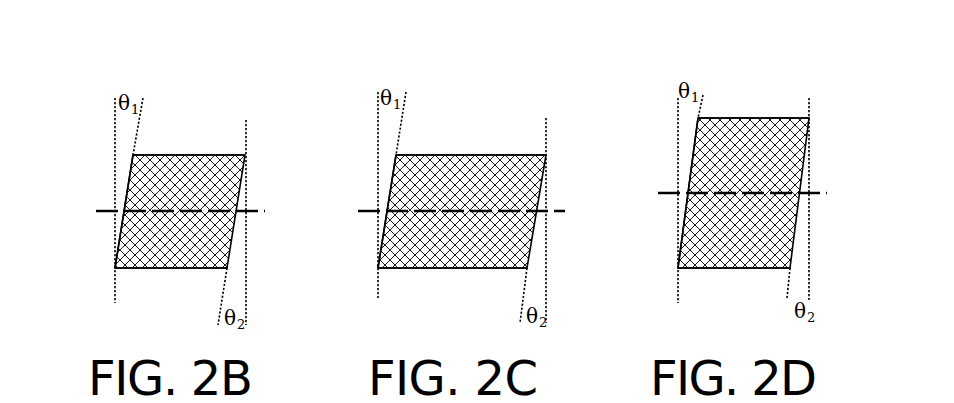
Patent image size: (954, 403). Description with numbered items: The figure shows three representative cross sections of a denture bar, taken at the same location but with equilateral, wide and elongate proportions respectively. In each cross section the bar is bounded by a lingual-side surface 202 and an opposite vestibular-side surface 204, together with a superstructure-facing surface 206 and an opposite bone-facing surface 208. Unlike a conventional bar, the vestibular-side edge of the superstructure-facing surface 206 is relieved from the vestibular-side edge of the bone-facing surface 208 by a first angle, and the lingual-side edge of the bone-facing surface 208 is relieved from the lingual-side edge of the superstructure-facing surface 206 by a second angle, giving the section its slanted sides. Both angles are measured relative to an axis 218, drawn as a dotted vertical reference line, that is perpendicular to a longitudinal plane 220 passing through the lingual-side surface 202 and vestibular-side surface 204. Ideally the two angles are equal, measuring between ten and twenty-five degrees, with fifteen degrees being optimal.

In FIG. 2B, the lingual-side surface 202 is at (233, 248).
In FIG. 2C, the lingual-side surface 202 is at (532, 250).
In FIG. 2D, the lingual-side surface 202 is at (792, 248).
In FIG. 2B, the vestibular-side surface 204 is at (127, 193).
In FIG. 2C, the vestibular-side surface 204 is at (388, 192).
In FIG. 2D, the vestibular-side surface 204 is at (688, 172).
In FIG. 2B, the superstructure-facing surface 206 is at (227, 157).
In FIG. 2C, the superstructure-facing surface 206 is at (453, 155).
In FIG. 2D, the superstructure-facing surface 206 is at (733, 118).
In FIG. 2B, the bone-facing surface 208 is at (173, 270).
In FIG. 2C, the bone-facing surface 208 is at (443, 270).
In FIG. 2D, the bone-facing surface 208 is at (735, 270).
In FIG. 2B, the axis 218 is at (115, 137).
In FIG. 2C, the axis 218 is at (377, 137).
In FIG. 2D, the axis 218 is at (677, 137).
In FIG. 2B, the longitudinal plane 220 is at (197, 207).
In FIG. 2C, the longitudinal plane 220 is at (493, 212).
In FIG. 2D, the longitudinal plane 220 is at (757, 192).